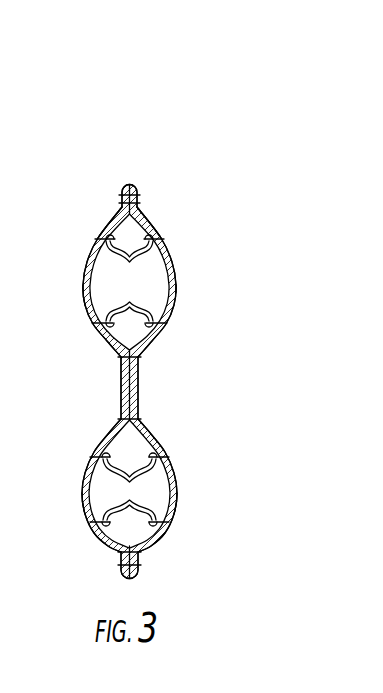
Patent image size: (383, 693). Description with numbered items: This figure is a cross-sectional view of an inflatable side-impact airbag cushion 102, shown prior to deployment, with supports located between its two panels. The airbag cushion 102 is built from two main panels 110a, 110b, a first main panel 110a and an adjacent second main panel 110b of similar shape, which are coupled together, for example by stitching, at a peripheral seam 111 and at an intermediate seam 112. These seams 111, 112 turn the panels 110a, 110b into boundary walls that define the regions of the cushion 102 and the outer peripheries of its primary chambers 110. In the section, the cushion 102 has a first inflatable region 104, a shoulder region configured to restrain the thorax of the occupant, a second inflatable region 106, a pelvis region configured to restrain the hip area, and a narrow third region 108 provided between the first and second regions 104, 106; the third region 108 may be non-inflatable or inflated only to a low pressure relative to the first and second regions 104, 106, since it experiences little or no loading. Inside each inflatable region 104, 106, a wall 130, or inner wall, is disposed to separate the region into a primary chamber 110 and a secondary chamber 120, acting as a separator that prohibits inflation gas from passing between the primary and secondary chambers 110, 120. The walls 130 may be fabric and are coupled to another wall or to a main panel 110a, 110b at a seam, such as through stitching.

The airbag cushion 102 is at (58, 156).
The first inflatable region 104 is at (198, 279).
The second inflatable region 106 is at (188, 497).
The third region 108 is at (168, 380).
The primary chamber 110 is at (89, 251).
The first main panel 110a is at (97, 217).
The second main panel 110b is at (150, 221).
The peripheral seam 111 is at (136, 203).
The intermediate seam 112 is at (122, 203).
The secondary chamber 120 is at (105, 285).
The wall 130 is at (158, 247).